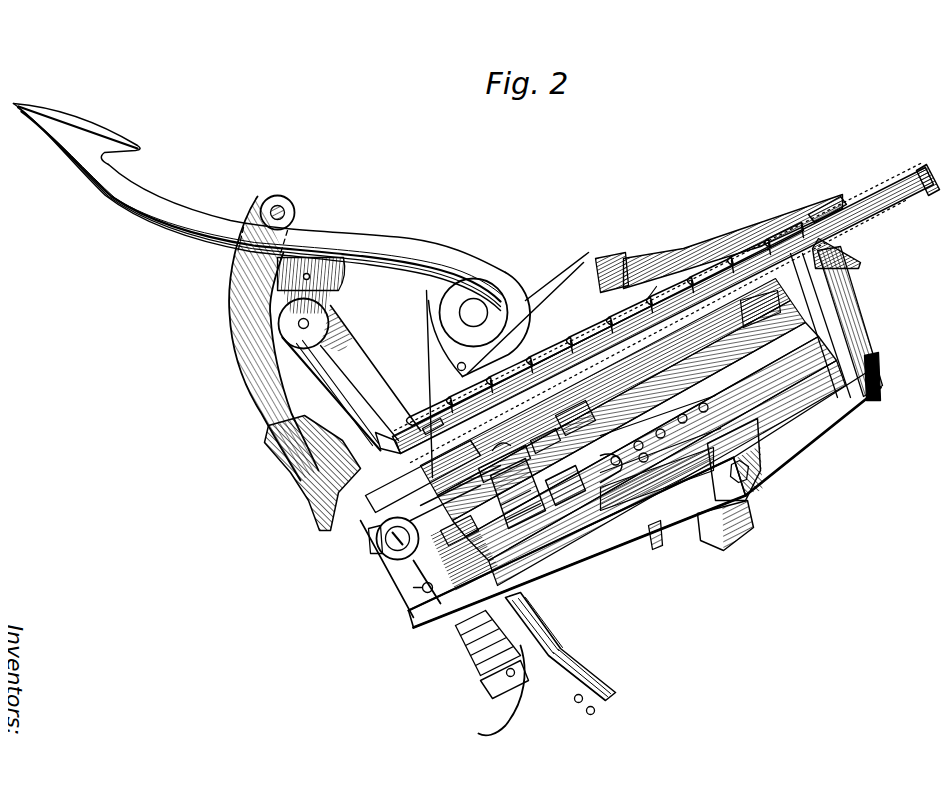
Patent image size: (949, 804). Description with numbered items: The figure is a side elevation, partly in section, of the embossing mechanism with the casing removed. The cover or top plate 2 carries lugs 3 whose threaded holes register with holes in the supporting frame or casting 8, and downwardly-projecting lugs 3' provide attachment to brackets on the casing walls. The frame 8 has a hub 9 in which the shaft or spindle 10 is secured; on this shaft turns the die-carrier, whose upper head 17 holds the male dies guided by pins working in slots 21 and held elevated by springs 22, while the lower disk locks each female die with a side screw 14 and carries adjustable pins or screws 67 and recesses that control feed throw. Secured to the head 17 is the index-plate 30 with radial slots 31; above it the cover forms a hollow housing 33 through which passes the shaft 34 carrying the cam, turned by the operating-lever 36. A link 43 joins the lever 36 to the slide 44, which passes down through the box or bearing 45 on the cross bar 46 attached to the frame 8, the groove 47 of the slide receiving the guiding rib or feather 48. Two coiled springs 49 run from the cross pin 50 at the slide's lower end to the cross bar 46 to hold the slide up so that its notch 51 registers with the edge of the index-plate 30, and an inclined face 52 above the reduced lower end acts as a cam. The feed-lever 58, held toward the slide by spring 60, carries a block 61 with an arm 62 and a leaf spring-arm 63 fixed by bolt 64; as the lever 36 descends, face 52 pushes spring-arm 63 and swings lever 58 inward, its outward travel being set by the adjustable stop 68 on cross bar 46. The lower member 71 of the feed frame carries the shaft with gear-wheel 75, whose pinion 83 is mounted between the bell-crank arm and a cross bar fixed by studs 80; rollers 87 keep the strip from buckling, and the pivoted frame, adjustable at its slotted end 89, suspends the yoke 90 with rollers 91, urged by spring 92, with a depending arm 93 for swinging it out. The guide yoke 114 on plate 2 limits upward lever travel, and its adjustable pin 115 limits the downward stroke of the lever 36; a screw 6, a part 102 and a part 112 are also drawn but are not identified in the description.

The cover or top plate 2 is at (666, 300).
The lugs 3 is at (837, 324).
The downwardly-projecting lugs 3' is at (849, 254).
The screw 6 is at (705, 422).
The frame or casting 8 is at (820, 417).
The hub 9 is at (762, 506).
The shaft or spindle 10 is at (742, 540).
The screw 14 is at (651, 439).
The upper portion or head of the turret 17 is at (636, 421).
The slots or openings 21 is at (790, 372).
The springs 22 is at (745, 305).
The index-plate 30 is at (832, 193).
The radial slots 31 is at (612, 330).
The hollow housing or projection 33 is at (528, 365).
The shaft 34 is at (448, 405).
The operating-lever 36 is at (128, 131).
The link 43 is at (330, 292).
The slide 44 is at (350, 381).
The box or bearing 45 is at (372, 516).
The cross bar or member 46 is at (378, 550).
The groove or channel 47 is at (343, 415).
The guiding rib or feather 48 is at (613, 400).
The coiled springs 49 is at (470, 662).
The cross bar or pin 50 is at (492, 695).
The recess or notch 51 is at (665, 262).
The inclined face 52 is at (733, 242).
The lever 58 is at (418, 512).
The spring 60 is at (460, 518).
The downwardly-extending block 61 is at (546, 445).
The arm 62 is at (560, 645).
The spring-arm 63 is at (560, 680).
The bolt 64 is at (532, 598).
The adjustable pins or screws 67 is at (656, 452).
The adjustable stop or cam 68 is at (405, 563).
The lower member 71 is at (523, 512).
The gear-wheel 75 is at (516, 497).
The studs or posts 80 is at (466, 553).
The pinion 83 is at (518, 494).
The rollers 87 is at (566, 486).
The slotted end 89 is at (480, 472).
The yoke 90 is at (578, 430).
The rollers 91 is at (610, 460).
The spring 92 is at (667, 473).
The downwardly-projecting arm 93 is at (659, 543).
The hook spring 102 is at (508, 722).
The clip 112 is at (508, 439).
The guide arm or yoke 114 is at (237, 343).
The adjustable pin or stud 115 is at (284, 470).